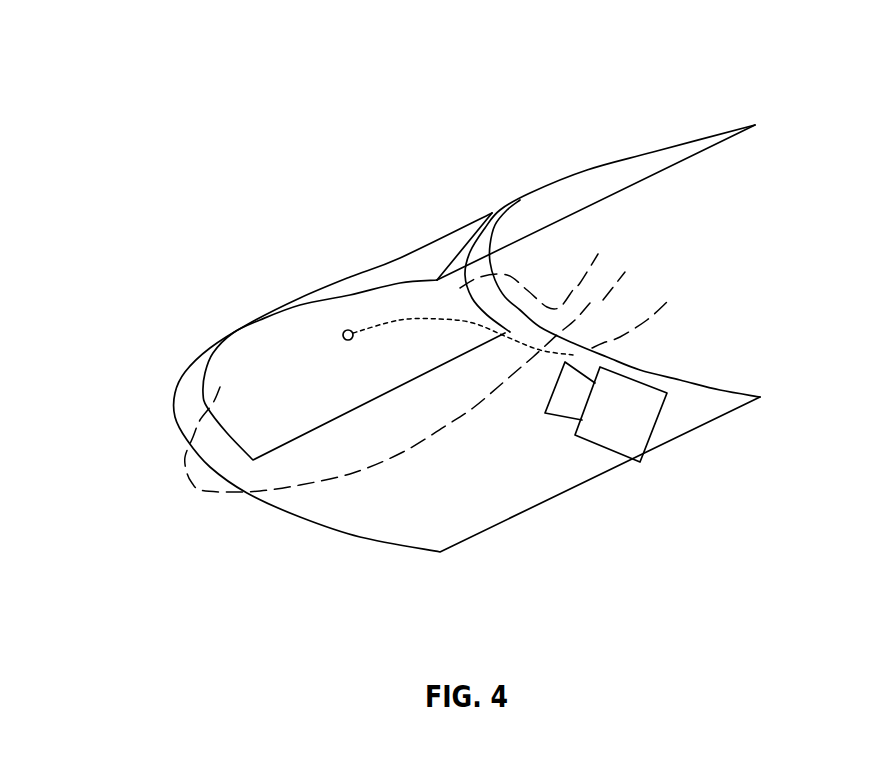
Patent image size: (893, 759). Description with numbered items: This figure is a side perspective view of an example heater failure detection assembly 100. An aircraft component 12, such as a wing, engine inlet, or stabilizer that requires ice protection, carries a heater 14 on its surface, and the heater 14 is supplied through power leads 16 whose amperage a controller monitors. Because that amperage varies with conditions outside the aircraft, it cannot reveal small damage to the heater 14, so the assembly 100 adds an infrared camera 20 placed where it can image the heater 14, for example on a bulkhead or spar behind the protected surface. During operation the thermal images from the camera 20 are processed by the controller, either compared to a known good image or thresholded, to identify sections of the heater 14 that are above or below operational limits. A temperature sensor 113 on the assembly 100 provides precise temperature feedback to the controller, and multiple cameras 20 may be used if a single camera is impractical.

The heater failure detection assembly 100 is at (148, 70).
The aircraft component 12 is at (685, 139).
The heater 14 is at (272, 347).
The power leads 16 is at (573, 293).
The temperature sensor 113 is at (348, 330).
The infrared camera 20 is at (607, 435).